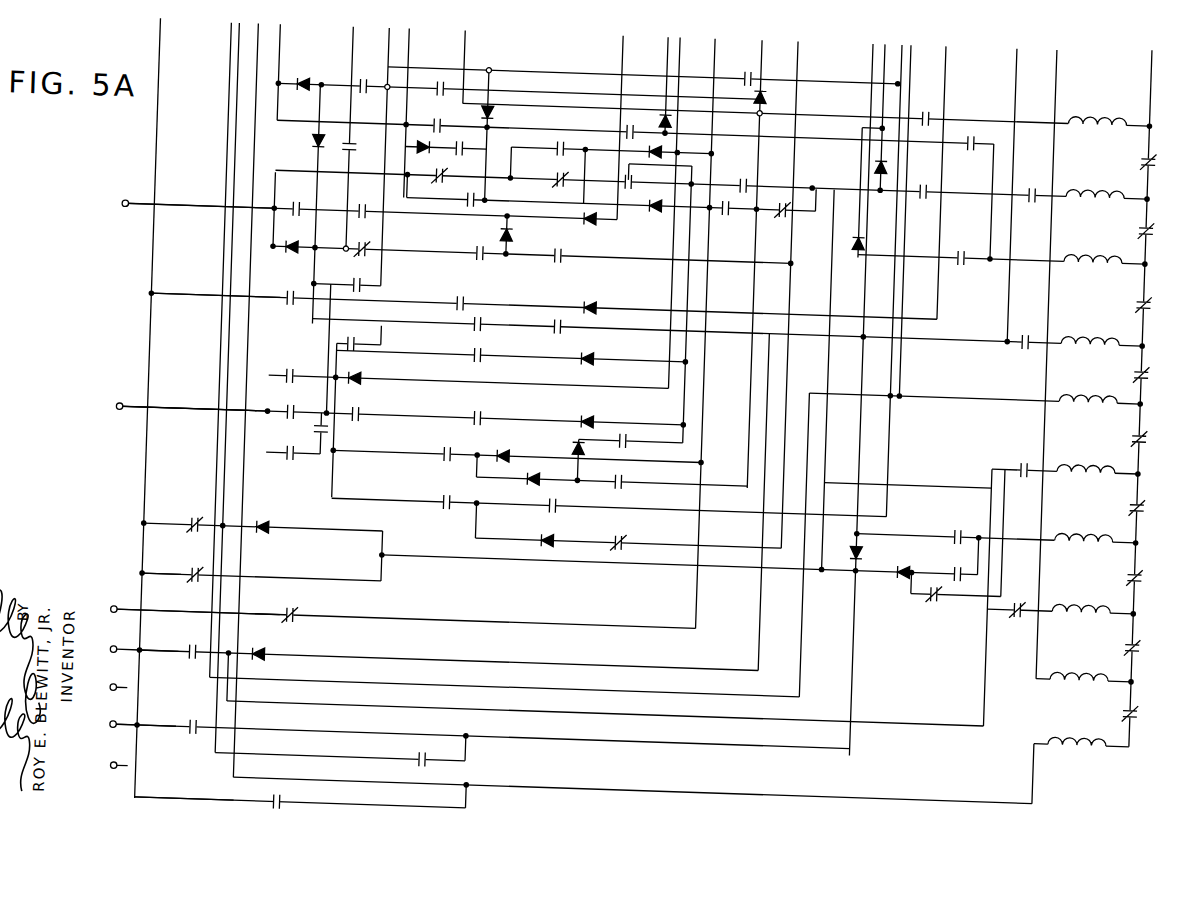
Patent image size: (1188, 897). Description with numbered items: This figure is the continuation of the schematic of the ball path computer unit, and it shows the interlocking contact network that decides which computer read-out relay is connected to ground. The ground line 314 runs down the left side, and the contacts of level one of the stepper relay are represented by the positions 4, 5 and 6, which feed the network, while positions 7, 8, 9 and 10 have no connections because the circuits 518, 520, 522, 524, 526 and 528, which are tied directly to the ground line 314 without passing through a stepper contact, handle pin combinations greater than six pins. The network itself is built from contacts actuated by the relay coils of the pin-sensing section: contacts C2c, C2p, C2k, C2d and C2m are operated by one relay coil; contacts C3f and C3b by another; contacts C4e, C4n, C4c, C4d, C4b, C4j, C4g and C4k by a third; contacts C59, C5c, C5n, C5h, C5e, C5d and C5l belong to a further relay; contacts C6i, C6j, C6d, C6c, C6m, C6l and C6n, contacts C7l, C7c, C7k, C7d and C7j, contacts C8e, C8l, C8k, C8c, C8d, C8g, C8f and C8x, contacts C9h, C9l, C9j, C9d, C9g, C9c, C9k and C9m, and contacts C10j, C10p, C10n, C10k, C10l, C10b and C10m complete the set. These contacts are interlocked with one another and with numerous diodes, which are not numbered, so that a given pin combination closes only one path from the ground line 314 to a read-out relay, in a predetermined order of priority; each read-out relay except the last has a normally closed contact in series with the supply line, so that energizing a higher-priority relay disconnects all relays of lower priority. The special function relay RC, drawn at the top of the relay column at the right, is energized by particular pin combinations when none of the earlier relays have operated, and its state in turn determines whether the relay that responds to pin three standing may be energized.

The ground line 314 is at (155, 140).
The stepper relay contact position 4 is at (195, 195).
The stepper relay contact position 5 is at (189, 397).
The stepper relay contact position 6 is at (194, 599).
The stepper relay contact position 7 is at (121, 640).
The stepper relay contact position 8 is at (115, 678).
The stepper relay contact position 9 is at (120, 714).
The stepper relay contact position 10 is at (113, 756).
The circuit for combinations greater than six pins 518 is at (163, 291).
The circuit for combinations greater than six pins 520 is at (188, 403).
The circuit for combinations greater than six pins 522 is at (160, 568).
The circuit for combinations greater than six pins 524 is at (172, 648).
The circuit for combinations greater than six pins 526 is at (174, 723).
The circuit for combinations greater than six pins 528 is at (212, 792).
The relay contact C9h is at (358, 72).
The relay contact C6i is at (438, 70).
The relay contact C6j is at (752, 51).
The relay contact C7l is at (425, 111).
The relay contact C3f is at (476, 136).
The relay contact C4e is at (364, 155).
The relay contact C59 is at (361, 195).
The relay contact C2c is at (290, 194).
The relay contact C2p is at (456, 181).
The relay contact C5c is at (538, 154).
The relay contact C5n is at (537, 184).
The relay contact C7c is at (445, 213).
The relay contact C8e is at (580, 245).
The relay contact C9l is at (496, 262).
The relay contact C4n is at (372, 243).
The relay contact C8l is at (342, 272).
The relay contact C10j is at (267, 307).
The relay contact C3b is at (474, 294).
The relay contact C7k is at (498, 318).
The relay contact C9j is at (368, 338).
The relay contact C5h is at (551, 338).
The relay contact C4c is at (486, 341).
The relay contact C9d is at (282, 356).
The relay contact C7d is at (284, 397).
The relay contact C6d is at (374, 403).
The relay contact C5e is at (494, 408).
The relay contact C2k is at (343, 430).
The relay contact C8k is at (277, 465).
The relay contact C6c is at (457, 439).
The relay contact C5d is at (634, 420).
The relay contact C8c is at (638, 490).
The relay contact C2d is at (438, 511).
The relay contact C8d is at (571, 513).
The relay contact C10p is at (638, 530).
The relay contact C6m is at (208, 516).
The relay contact C10n is at (210, 566).
The relay contact C2m is at (310, 605).
The relay contact C9g is at (210, 644).
The relay contact C4d is at (186, 713).
The relay contact C7j is at (454, 750).
The relay contact C10k is at (302, 811).
The relay contact C10l is at (637, 122).
The relay contact C10b is at (750, 170).
The relay contact C9c is at (647, 175).
The relay contact C4b is at (732, 221).
The relay contact C10m is at (792, 192).
The relay contact C4j is at (919, 101).
The relay contact C8g is at (973, 102).
The relay contact C4g is at (932, 158).
The relay contact C8f is at (1027, 180).
The relay contact C4k is at (961, 241).
The relay contact C5l is at (1022, 327).
The relay contact C6l is at (1018, 456).
The relay contact C6n is at (951, 520).
The relay contact C9k is at (969, 538).
The relay contact C9m is at (940, 613).
The relay contact C8x is at (1006, 622).
The special function relay RC is at (1096, 84).